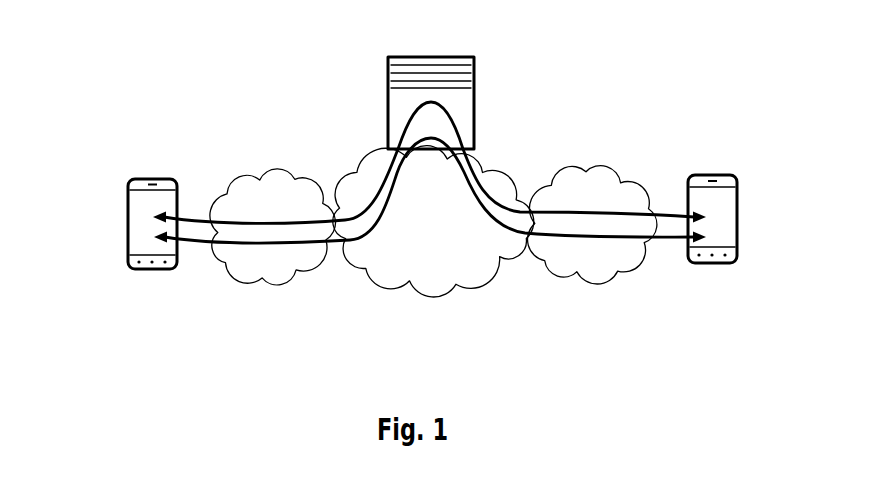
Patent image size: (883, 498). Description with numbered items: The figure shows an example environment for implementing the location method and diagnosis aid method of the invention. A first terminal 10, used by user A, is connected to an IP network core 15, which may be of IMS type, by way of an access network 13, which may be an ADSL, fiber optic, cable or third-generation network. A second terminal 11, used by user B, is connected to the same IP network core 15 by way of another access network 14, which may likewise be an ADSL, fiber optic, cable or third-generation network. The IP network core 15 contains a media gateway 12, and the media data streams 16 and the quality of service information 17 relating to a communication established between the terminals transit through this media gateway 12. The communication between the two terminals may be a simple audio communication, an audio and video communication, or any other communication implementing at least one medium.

The first terminal 10 is at (128, 227).
The second terminal 11 is at (735, 180).
The media gateway 12 is at (475, 57).
The access network 13 is at (267, 282).
The access network 14 is at (593, 278).
The IP network core 15 is at (435, 283).
The media data streams 16 is at (462, 228).
The quality of service information 17 is at (362, 178).